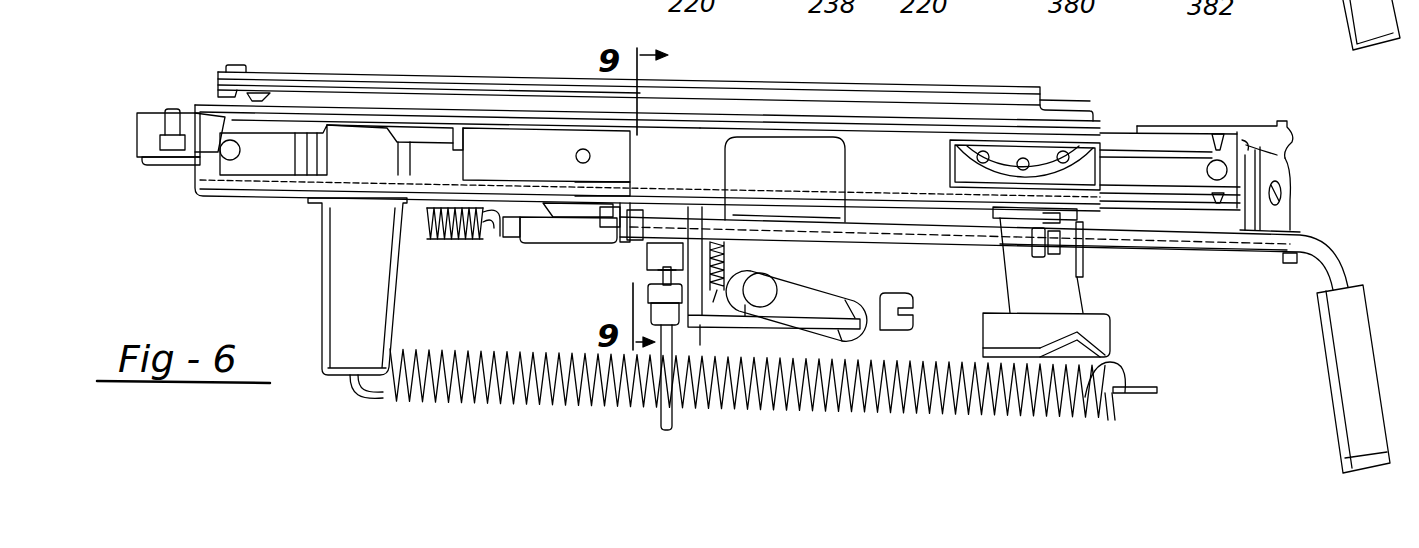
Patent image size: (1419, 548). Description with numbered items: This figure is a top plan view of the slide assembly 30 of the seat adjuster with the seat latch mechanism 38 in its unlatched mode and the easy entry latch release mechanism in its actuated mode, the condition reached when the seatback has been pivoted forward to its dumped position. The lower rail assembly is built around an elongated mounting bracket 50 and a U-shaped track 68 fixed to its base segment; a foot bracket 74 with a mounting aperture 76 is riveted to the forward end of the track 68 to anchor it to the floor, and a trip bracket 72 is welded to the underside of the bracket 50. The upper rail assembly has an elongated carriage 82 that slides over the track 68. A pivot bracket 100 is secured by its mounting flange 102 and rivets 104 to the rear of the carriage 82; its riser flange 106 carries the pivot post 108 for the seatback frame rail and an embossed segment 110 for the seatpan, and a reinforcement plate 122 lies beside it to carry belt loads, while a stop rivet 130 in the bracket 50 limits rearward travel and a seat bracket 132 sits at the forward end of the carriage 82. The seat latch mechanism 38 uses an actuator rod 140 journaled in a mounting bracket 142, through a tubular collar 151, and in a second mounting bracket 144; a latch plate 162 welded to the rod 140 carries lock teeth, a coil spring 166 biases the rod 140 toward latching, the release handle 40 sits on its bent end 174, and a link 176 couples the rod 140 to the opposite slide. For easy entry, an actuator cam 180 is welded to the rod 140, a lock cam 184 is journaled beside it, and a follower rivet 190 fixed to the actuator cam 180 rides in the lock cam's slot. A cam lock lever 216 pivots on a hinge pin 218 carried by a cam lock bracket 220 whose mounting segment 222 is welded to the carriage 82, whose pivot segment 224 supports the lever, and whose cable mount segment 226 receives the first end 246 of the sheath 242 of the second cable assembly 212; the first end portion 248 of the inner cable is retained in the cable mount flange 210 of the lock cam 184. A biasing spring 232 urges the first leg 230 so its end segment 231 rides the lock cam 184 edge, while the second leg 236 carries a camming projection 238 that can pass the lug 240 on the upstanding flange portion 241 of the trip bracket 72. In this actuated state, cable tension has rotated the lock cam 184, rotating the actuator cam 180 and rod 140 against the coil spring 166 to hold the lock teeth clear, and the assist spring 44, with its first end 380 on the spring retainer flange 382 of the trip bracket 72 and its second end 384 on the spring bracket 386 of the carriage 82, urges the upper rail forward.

The slide assembly 30 is at (1140, 78).
The seat latch mechanism 38 is at (525, 262).
The release handle 40 is at (1318, 387).
The assist spring 44 is at (955, 412).
The mounting bracket 50 is at (998, 90).
The U-shaped track 68 is at (1200, 103).
The trip bracket 72 is at (1098, 306).
The foot bracket 74 is at (1241, 122).
The mounting aperture 76 is at (1282, 193).
The carriage 82 is at (862, 140).
The pivot bracket 100 is at (400, 124).
The mounting flange 102 is at (277, 165).
The rivets 104 is at (228, 162).
The riser flange 106 is at (185, 160).
The pivot post 108 is at (170, 110).
The embossed segment 110 is at (458, 145).
The reinforcement plate 122 is at (500, 94).
The stop rivet 130 is at (233, 66).
The seat bracket 132 is at (1046, 148).
The actuator rod 140 is at (1174, 260).
The mounting bracket 142 is at (1003, 228).
The second mounting bracket 144 is at (490, 255).
The tubular collar 151 is at (1040, 257).
The latch plate 162 is at (440, 192).
The coil spring 166 is at (428, 258).
The bent end 174 is at (1333, 258).
The link 176 is at (1082, 262).
The actuator cam 180 is at (716, 200).
The lock cam 184 is at (688, 202).
The follower rivet 190 is at (590, 175).
The cable mount flange 210 is at (560, 185).
The second cable assembly 212 is at (688, 428).
The cam lock lever 216 is at (835, 287).
The hinge pin 218 is at (757, 305).
The cam lock bracket 220 is at (870, 333).
The mounting segment 222 is at (782, 167).
The pivot segment 224 is at (808, 258).
The cable mount segment 226 is at (650, 290).
The first leg 230 is at (745, 316).
The end segment 231 is at (700, 345).
The biasing spring 232 is at (743, 240).
The second leg 236 is at (848, 305).
The camming projection 238 is at (842, 341).
The lug 240 is at (1077, 340).
The upstanding flange portion 241 is at (1040, 356).
The sheath 242 is at (658, 418).
The first end 246 is at (652, 312).
The first end portion 248 is at (660, 278).
The first end 380 is at (1118, 420).
The spring retainer flange 382 is at (1147, 397).
The second end 384 is at (367, 398).
The spring bracket 386 is at (337, 270).